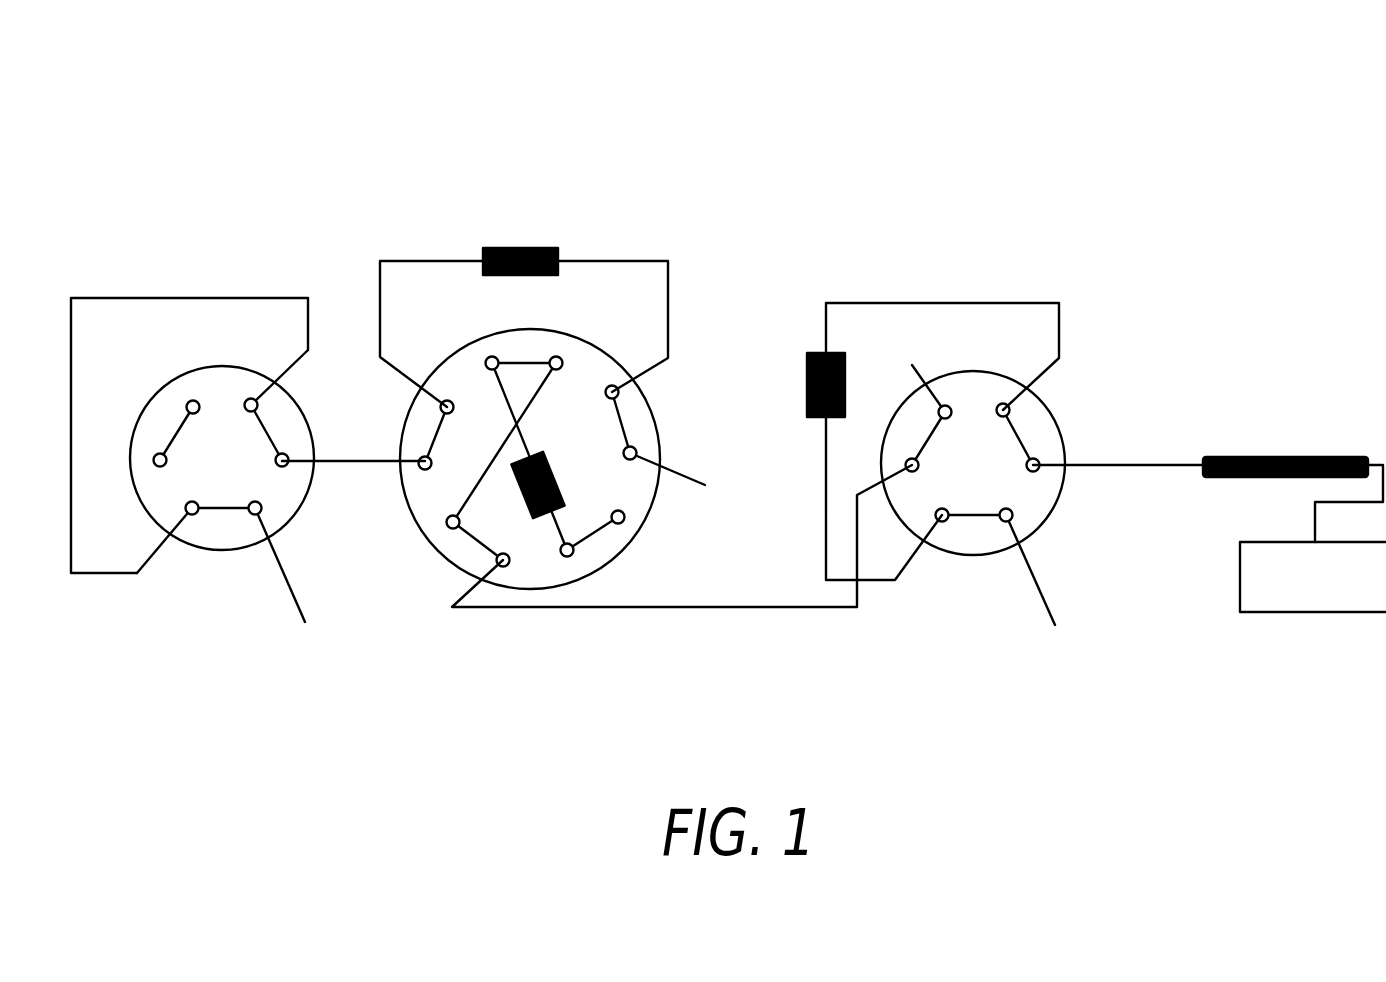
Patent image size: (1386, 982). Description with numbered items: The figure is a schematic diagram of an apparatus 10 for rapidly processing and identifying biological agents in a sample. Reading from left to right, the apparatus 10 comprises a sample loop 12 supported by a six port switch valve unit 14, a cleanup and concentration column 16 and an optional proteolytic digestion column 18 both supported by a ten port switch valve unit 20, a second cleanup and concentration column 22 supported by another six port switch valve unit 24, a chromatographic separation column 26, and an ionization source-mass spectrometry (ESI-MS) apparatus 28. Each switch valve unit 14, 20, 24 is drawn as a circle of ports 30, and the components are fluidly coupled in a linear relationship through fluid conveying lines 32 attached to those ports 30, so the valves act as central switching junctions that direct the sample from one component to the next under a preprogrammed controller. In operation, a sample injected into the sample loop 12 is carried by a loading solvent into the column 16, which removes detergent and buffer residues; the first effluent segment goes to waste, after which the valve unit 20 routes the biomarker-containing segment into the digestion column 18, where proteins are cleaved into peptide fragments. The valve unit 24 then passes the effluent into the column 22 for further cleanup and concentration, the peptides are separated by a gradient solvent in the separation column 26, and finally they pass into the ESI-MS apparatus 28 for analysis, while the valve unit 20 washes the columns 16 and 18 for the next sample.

The apparatus 10 is at (1158, 200).
The sample loop 12 is at (222, 298).
The six port switch valve unit 14 is at (220, 549).
The cleanup and concentration column 16 is at (527, 248).
The proteolytic digestion column 18 is at (566, 487).
The ten port switch valve unit 20 is at (437, 555).
The cleanup and concentration column 22 is at (807, 377).
The six port switch valve unit 24 is at (978, 555).
The chromatographic separation column 26 is at (1270, 457).
The ionization source-mass spectrometry (ESI-MS) apparatus 28 is at (1307, 613).
The ports 30 is at (283, 468).
The fluid conveying lines 32 is at (310, 312).